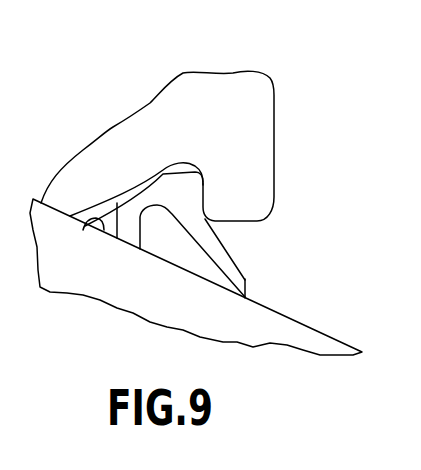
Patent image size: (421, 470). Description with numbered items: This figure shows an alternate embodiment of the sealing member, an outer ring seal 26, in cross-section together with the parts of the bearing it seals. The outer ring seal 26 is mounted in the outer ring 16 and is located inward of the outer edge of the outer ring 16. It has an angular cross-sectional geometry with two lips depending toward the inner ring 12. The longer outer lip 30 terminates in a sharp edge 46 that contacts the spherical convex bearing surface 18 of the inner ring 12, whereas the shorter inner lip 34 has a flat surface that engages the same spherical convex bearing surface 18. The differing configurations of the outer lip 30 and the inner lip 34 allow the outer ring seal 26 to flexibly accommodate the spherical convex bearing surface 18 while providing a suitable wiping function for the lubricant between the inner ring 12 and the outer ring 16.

The inner ring 12 is at (252, 332).
The outer ring 16 is at (277, 117).
The spherical convex bearing surface 18 is at (100, 222).
The outer ring seal 26 is at (146, 199).
The outer lip 30 is at (227, 253).
The inner lip 34 is at (125, 228).
The sharp edge 46 is at (250, 293).